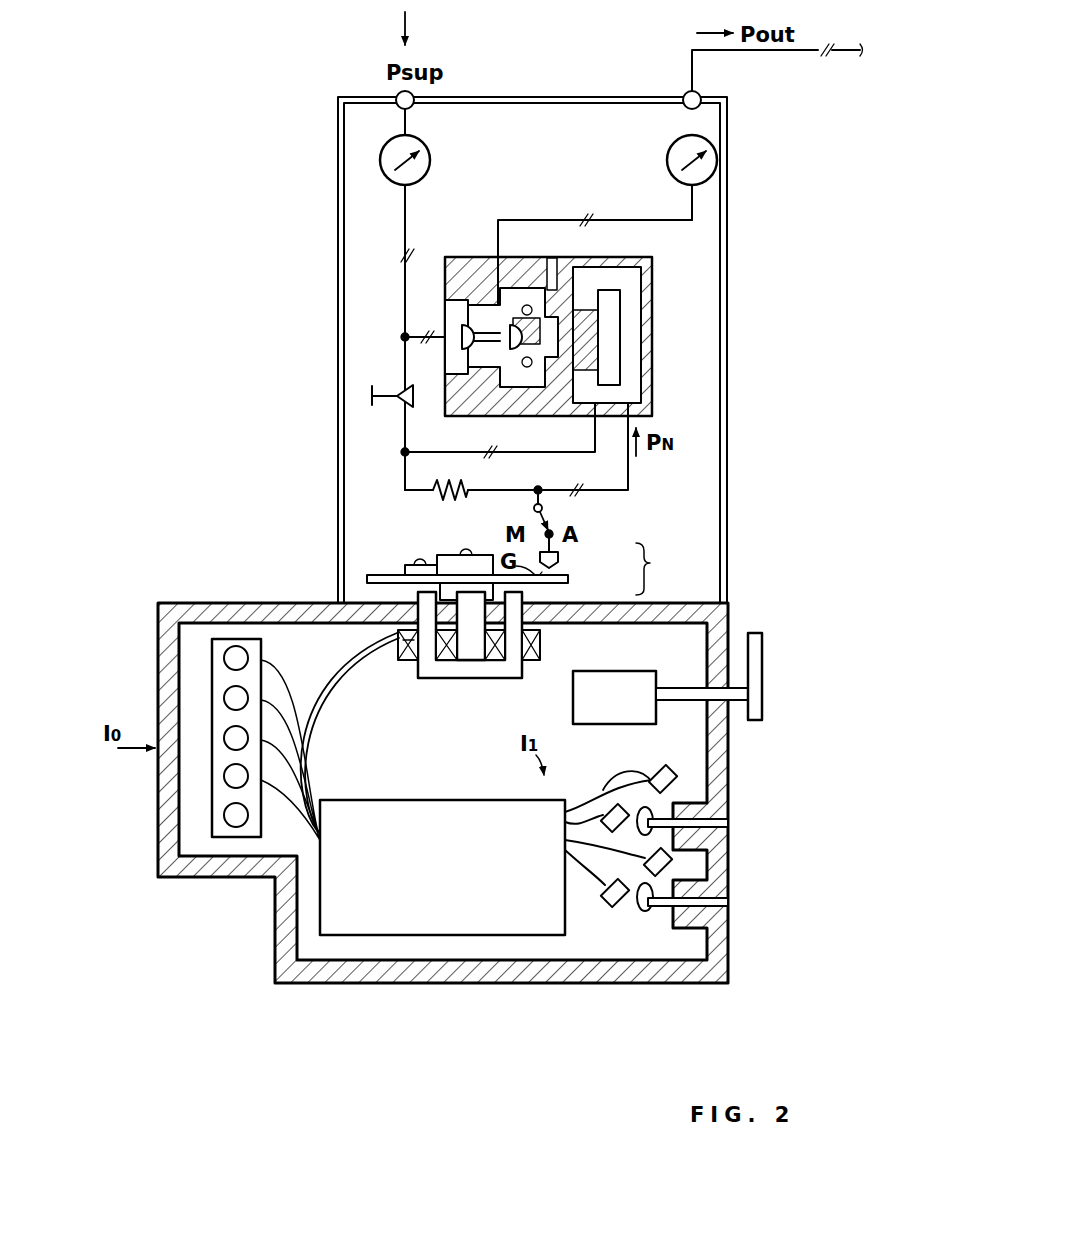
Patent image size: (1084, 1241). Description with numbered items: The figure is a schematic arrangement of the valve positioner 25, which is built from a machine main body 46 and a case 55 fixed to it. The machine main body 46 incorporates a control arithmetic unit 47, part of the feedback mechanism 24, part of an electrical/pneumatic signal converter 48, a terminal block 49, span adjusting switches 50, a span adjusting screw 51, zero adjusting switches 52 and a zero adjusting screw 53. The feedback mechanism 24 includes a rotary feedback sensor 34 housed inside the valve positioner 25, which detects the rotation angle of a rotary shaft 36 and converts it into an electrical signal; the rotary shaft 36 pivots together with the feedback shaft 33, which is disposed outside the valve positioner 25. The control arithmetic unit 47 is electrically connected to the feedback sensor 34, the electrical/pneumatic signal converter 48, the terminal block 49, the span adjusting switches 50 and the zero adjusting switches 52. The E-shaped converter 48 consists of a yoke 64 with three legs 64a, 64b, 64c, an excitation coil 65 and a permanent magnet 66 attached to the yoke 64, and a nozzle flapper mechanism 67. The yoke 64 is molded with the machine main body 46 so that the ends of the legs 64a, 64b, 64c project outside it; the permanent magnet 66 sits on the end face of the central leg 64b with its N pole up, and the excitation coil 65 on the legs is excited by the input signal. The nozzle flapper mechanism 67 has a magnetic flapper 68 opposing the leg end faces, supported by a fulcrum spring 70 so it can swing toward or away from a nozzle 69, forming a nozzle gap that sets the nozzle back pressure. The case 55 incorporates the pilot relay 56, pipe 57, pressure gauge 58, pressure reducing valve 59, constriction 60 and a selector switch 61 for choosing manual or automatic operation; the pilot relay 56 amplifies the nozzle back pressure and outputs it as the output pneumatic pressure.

The feedback mechanism 24 is at (675, 669).
The valve positioner 25 is at (250, 478).
The feedback shaft 33 is at (763, 651).
The rotary feedback sensor 34 is at (619, 679).
The rotary shaft 36 is at (684, 700).
The machine main body 46 is at (493, 983).
The control arithmetic unit 47 is at (355, 935).
The electrical/pneumatic signal converter 48 is at (461, 686).
The terminal block 49 is at (246, 840).
The span adjusting switches 50 is at (603, 792).
The span adjusting screw 51 is at (730, 823).
The zero adjusting switches 52 is at (661, 875).
The zero adjusting screw 53 is at (730, 903).
The case 55 is at (338, 352).
The pilot relay 56 is at (700, 350).
The pipe 57 is at (405, 310).
The pressure gauge 58 is at (430, 168).
The pressure reducing valve 59 is at (401, 405).
The constriction 60 is at (453, 500).
The selector switch 61 is at (553, 520).
The yoke 64 is at (430, 678).
The leg 64a is at (399, 642).
The central leg 64b is at (471, 653).
The leg 64c is at (542, 639).
The excitation coil 65 is at (407, 658).
The permanent magnet 66 is at (367, 582).
The nozzle flapper mechanism 67 is at (657, 569).
The flapper 68 is at (568, 580).
The nozzle 69 is at (558, 559).
The fulcrum spring 70 is at (422, 562).